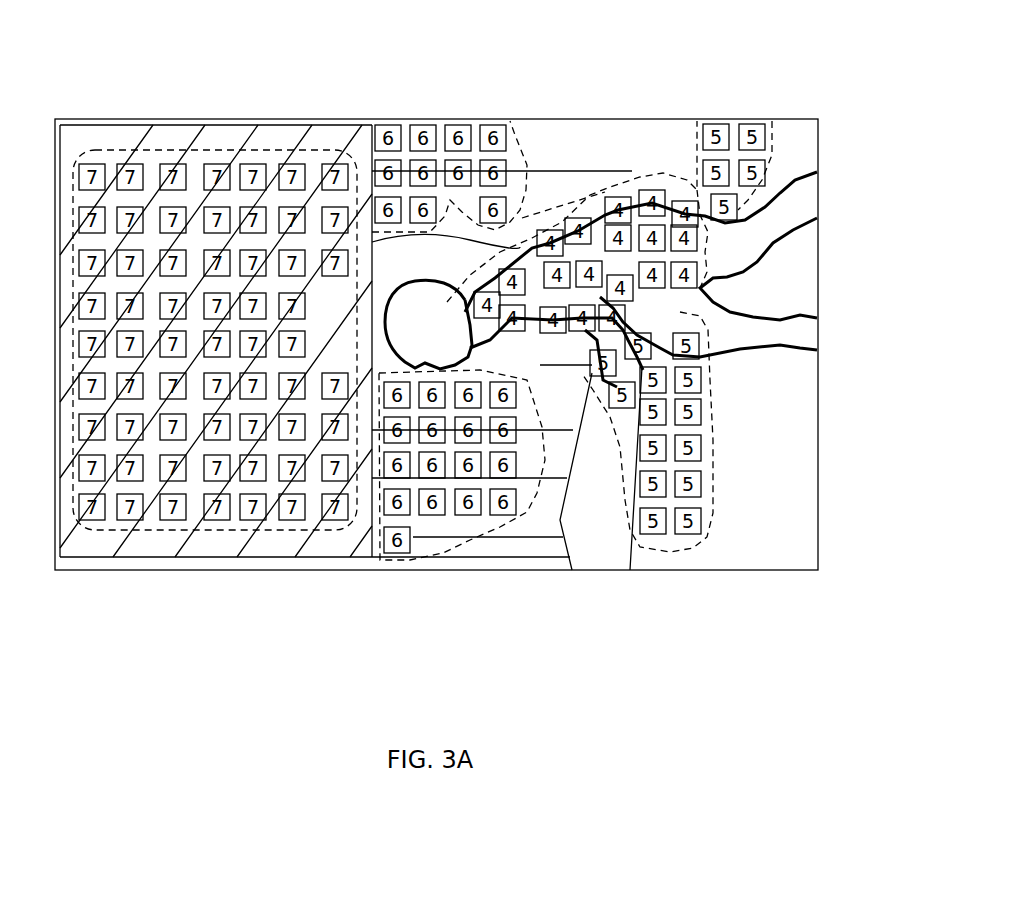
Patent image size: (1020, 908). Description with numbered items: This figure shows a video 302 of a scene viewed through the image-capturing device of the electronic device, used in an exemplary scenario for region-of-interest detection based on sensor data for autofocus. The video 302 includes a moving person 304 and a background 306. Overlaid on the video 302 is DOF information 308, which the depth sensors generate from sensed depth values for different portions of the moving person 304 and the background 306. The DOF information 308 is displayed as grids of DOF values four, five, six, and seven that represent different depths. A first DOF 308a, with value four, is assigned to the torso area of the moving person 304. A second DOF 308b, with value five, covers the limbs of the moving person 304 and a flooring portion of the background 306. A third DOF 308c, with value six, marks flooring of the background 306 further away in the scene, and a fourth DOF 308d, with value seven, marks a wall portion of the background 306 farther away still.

The video 302 is at (68, 168).
The moving person 304 is at (753, 215).
The background 306 is at (593, 533).
The DOF information 308 is at (533, 615).
The first DOF 308a is at (708, 252).
The second DOF 308b is at (687, 547).
The third DOF 308c is at (516, 502).
The fourth DOF 308d is at (155, 530).